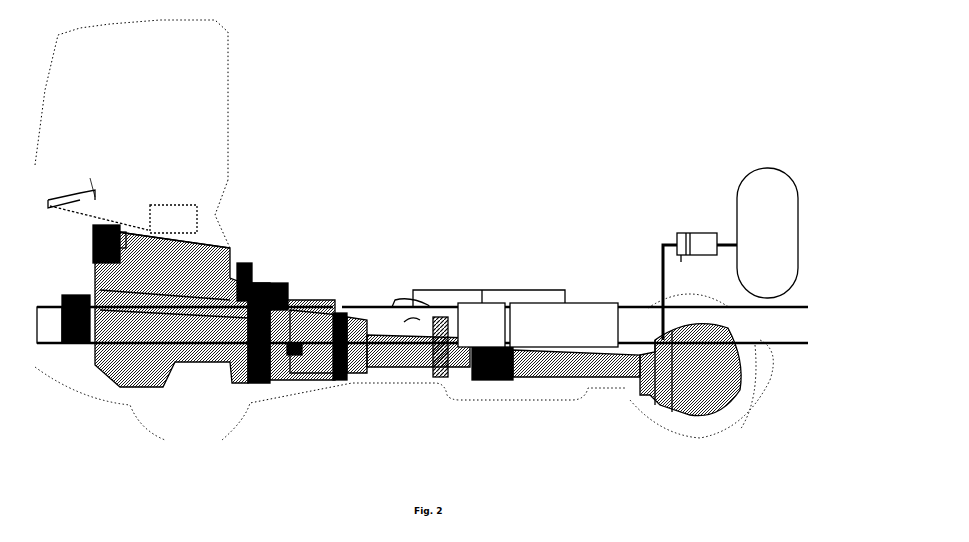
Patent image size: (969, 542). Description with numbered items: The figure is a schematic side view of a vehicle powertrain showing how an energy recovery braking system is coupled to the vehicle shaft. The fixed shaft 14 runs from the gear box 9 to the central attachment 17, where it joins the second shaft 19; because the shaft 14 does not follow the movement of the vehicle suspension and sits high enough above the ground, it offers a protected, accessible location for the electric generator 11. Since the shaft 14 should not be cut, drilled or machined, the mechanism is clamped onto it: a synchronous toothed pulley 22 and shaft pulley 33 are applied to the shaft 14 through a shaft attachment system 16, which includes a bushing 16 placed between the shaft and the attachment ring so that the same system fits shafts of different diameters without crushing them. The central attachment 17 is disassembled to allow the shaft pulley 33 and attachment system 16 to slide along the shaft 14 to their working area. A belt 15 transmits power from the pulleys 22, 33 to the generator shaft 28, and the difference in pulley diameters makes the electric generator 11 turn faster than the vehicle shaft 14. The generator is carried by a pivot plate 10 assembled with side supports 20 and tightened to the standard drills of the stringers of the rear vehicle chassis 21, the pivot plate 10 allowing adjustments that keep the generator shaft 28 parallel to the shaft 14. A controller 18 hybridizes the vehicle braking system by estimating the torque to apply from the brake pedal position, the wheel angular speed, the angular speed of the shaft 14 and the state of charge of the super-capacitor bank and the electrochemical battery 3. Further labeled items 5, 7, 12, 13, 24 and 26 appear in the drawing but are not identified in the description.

The electrochemical battery 3 is at (568, 335).
The rear-view mirror 5 is at (80, 193).
The control unit 7 is at (177, 207).
The gear box 9 is at (308, 295).
The pivot plate 10 is at (396, 300).
The electric generator 11 is at (398, 300).
The brake disc 12 is at (400, 357).
The brake pads 13 is at (388, 352).
The shaft 14 is at (420, 365).
The belt 15 is at (436, 366).
The shaft attachment system 16 is at (447, 372).
The central attachment 17 is at (478, 382).
The controller 18 is at (492, 333).
The shaft 19 is at (562, 367).
The side supports 20 is at (690, 370).
The rear vehicle chassis 21 is at (763, 345).
The synchronous toothed pulley 22 is at (437, 425).
The compressed air tank 24 is at (730, 254).
The engine 26 is at (232, 247).
The generator shaft 28 is at (448, 325).
The shaft pulley 33 is at (445, 429).